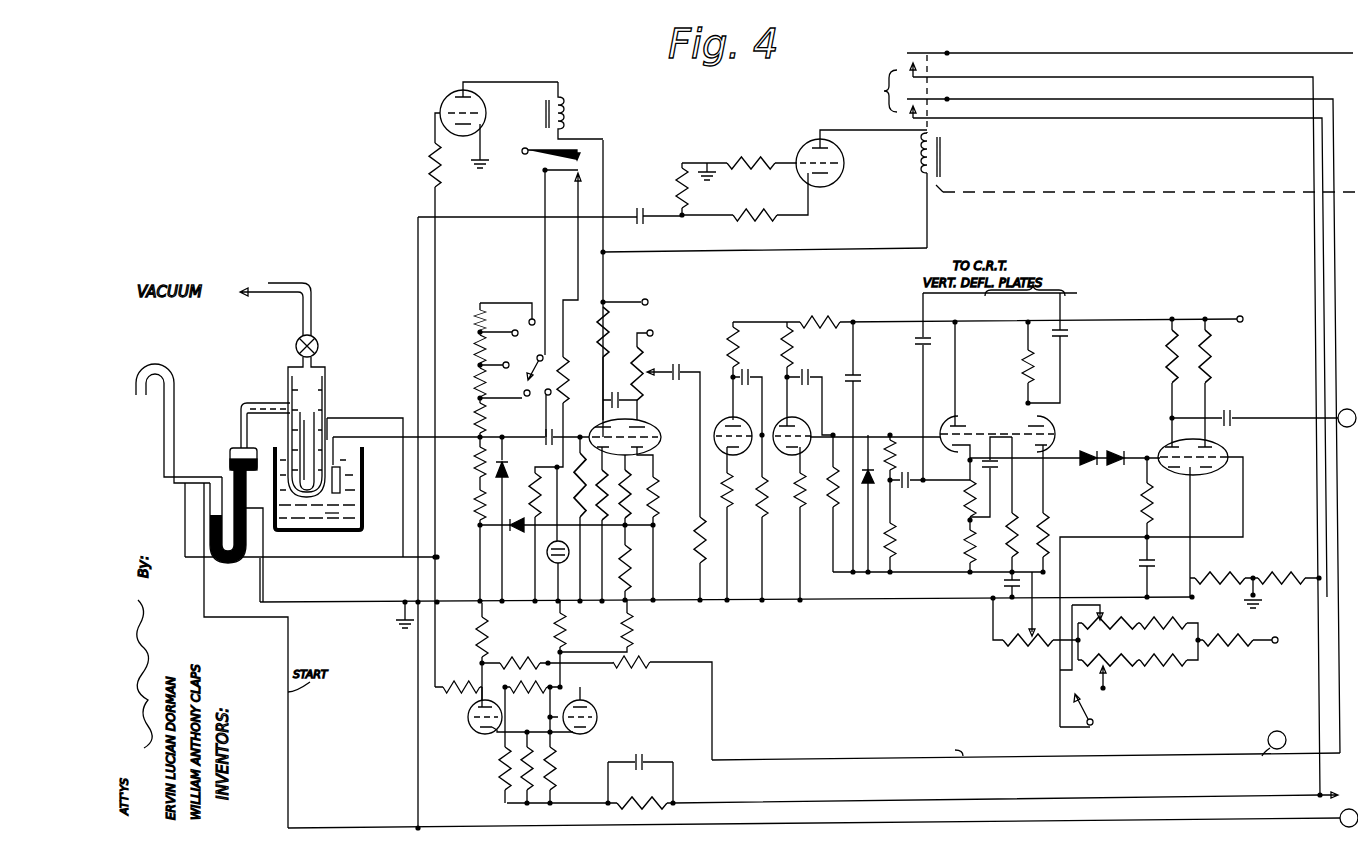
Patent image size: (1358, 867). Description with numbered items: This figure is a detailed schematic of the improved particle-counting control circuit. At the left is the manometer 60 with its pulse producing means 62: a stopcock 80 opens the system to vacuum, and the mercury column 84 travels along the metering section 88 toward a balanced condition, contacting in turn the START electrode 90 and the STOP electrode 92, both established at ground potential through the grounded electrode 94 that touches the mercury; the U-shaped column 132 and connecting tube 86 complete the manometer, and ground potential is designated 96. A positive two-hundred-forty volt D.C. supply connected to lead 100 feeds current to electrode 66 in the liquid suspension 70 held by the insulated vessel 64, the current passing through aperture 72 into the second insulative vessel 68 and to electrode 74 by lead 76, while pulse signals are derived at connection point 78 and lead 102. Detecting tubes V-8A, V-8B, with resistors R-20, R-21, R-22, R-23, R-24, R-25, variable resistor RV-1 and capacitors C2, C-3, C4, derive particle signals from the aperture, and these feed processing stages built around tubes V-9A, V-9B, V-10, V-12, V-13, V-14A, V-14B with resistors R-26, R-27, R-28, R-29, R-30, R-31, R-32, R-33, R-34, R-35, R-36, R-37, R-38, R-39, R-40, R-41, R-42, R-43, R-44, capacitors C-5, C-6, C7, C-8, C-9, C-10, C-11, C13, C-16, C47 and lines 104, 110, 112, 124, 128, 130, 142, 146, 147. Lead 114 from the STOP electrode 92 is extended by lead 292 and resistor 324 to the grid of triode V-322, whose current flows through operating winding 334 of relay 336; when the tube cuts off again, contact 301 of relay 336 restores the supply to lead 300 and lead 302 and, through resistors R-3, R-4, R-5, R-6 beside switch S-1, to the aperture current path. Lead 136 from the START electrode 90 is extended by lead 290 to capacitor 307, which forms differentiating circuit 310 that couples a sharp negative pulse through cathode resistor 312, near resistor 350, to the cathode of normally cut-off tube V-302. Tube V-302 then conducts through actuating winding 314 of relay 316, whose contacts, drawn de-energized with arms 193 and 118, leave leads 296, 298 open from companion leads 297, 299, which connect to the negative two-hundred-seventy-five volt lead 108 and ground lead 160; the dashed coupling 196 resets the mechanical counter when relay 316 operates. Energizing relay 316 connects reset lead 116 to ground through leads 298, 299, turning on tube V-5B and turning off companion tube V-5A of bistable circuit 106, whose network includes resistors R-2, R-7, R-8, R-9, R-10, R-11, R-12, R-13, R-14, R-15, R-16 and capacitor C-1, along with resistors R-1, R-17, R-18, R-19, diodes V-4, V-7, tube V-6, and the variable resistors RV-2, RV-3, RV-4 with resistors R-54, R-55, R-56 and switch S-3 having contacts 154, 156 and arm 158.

The manometer 60 is at (190, 403).
The pulse producing means 62 is at (321, 371).
The insulated vessel 64 is at (300, 531).
The electrode 66 is at (340, 475).
The second insulative vessel 68 is at (326, 404).
The liquid suspension 70 is at (330, 531).
The aperture 72 is at (349, 515).
The electrode 74 is at (304, 454).
The lead 76 is at (402, 453).
The connection point 78 is at (480, 435).
The stopcock 80 is at (296, 346).
The mercury column 84 is at (232, 476).
The connecting tube 86 is at (242, 441).
The metering section 88 is at (178, 472).
The START electrode 90 is at (200, 492).
The STOP electrode 92 is at (180, 486).
The grounded electrode 94 is at (244, 504).
The ground lead 96 is at (338, 602).
The lead 100 is at (622, 301).
The lead 102 is at (341, 432).
The bus line 104 is at (636, 597).
The bistable circuit 106 is at (597, 727).
The negative supply lead 108 is at (791, 800).
The line 110 is at (478, 527).
The line 112 is at (640, 525).
The lead 114 is at (384, 558).
The reset lead 116 is at (868, 758).
The lead 118 is at (941, 112).
The junction 124 is at (836, 435).
The line 128 is at (856, 392).
The bus line 130 is at (747, 604).
The U-tube 132 is at (220, 554).
The lead 136 is at (867, 824).
The line 142 is at (1068, 348).
The junction 146 is at (1144, 466).
The junction 147 is at (1152, 540).
The contact 154 is at (1061, 673).
The contact 156 is at (1108, 690).
The switch arm 158 is at (1060, 723).
The ground lead 160 is at (1257, 603).
The lead 193 is at (941, 70).
The coupling 196 is at (1182, 194).
The lead 290 is at (445, 219).
The lead 292 is at (428, 656).
The lead 296 is at (1152, 53).
The lead 297 is at (1214, 75).
The lead 298 is at (1158, 100).
The lead 299 is at (1254, 119).
The lead 300 is at (545, 237).
The switch 301 is at (525, 154).
The lead 302 is at (578, 179).
The capacitor 307 is at (644, 208).
The differentiating circuit 310 is at (684, 218).
The resistor 312 is at (737, 163).
The actuating winding 314 is at (950, 151).
The relay 316 is at (873, 91).
The resistor 324 is at (413, 156).
The operating winding 334 is at (564, 107).
The relay 336 is at (580, 157).
The resistor 350 is at (687, 190).
The triode V-322 is at (453, 94).
The tube V-302 is at (838, 154).
The diode V-4 is at (510, 480).
The companion tube V-5A is at (470, 719).
The tube V-5B is at (588, 709).
The gas tube V-6 is at (568, 562).
The diode V-7 is at (511, 531).
The detecting tube V-8A is at (592, 432).
The detecting tube V-8B is at (647, 428).
The triode V-9A is at (715, 419).
The triode V-9B is at (790, 422).
The diode V-10 is at (870, 451).
The tube V-12 is at (1048, 446).
The diode V-13 is at (1106, 448).
The triode V-14A is at (1159, 437).
The triode V-14B is at (1226, 452).
The resistor R-1 is at (478, 464).
The resistor R-2 is at (478, 631).
The resistor R-3 is at (478, 322).
The resistor R-4 is at (478, 352).
The resistor R-5 is at (478, 385).
The resistor R-6 is at (478, 418).
The resistor R-7 is at (472, 682).
The resistor R-8 is at (492, 766).
The resistor R-9 is at (531, 697).
The resistor R-10 is at (533, 805).
The resistor R-11 is at (626, 795).
The resistor R-12 is at (556, 758).
The resistor R-13 is at (537, 658).
The resistor R-14 is at (640, 664).
The resistor R-15 is at (634, 636).
The resistor R-16 is at (566, 634).
The resistor R-17 is at (567, 384).
The resistor R-18 is at (482, 512).
The resistor R-19 is at (578, 485).
The resistor R-20 is at (603, 322).
The resistor R-21 is at (658, 516).
The resistor R-22 is at (638, 470).
The resistor R-23 is at (637, 575).
The resistor R-24 is at (656, 489).
The resistor R-25 is at (698, 556).
The resistor R-26 is at (730, 504).
The resistor R-27 is at (736, 350).
The resistor R-28 is at (810, 321).
The resistor R-29 is at (794, 344).
The resistor R-30 is at (766, 512).
The resistor R-31 is at (800, 504).
The resistor R-32 is at (830, 482).
The resistor R-33 is at (905, 457).
The resistor R-34 is at (895, 526).
The resistor R-35 is at (997, 498).
The resistor R-36 is at (985, 545).
The resistor R-37 is at (1021, 504).
The resistor R-38 is at (1048, 526).
The resistor R-39 is at (1022, 364).
The resistor R-40 is at (1144, 505).
The resistor R-41 is at (1172, 348).
The resistor R-42 is at (1208, 350).
The resistor R-43 is at (1222, 577).
The resistor R-44 is at (1283, 569).
The resistor R-54 is at (1237, 644).
The resistor R-55 is at (1166, 620).
The resistor R-56 is at (1163, 670).
The variable resistor RV-1 is at (647, 389).
The variable resistor RV-2 is at (1045, 647).
The variable resistor RV-3 is at (1110, 616).
The variable resistor RV-4 is at (1107, 683).
The capacitor C-1 is at (643, 752).
The capacitor C2 is at (544, 448).
The capacitor C-3 is at (620, 387).
The capacitor C4 is at (678, 370).
The capacitor C-5 is at (810, 395).
The capacitor C-6 is at (859, 376).
The capacitor C7 is at (906, 482).
The capacitor C-8 is at (1001, 476).
The capacitor C-9 is at (1071, 334).
The capacitor C-10 is at (1022, 582).
The capacitor C-11 is at (1141, 561).
The capacitor C13 is at (1230, 418).
The capacitor C-16 is at (904, 344).
The capacitor C47 is at (753, 399).
The switch S-1 is at (526, 368).
The switch S-3 is at (1100, 722).